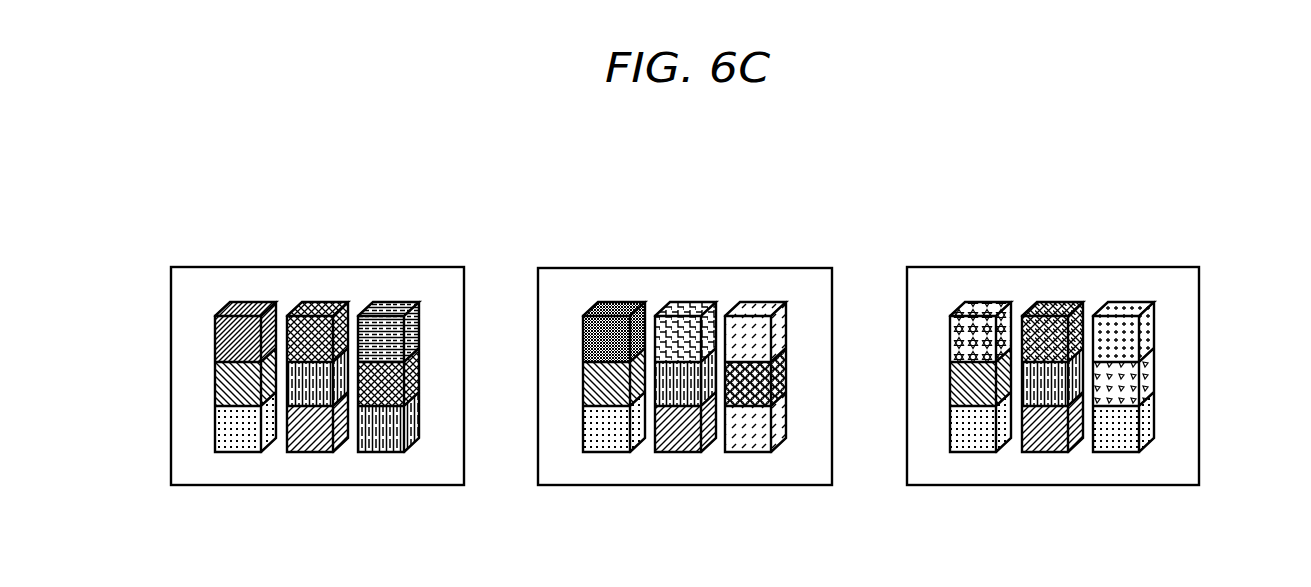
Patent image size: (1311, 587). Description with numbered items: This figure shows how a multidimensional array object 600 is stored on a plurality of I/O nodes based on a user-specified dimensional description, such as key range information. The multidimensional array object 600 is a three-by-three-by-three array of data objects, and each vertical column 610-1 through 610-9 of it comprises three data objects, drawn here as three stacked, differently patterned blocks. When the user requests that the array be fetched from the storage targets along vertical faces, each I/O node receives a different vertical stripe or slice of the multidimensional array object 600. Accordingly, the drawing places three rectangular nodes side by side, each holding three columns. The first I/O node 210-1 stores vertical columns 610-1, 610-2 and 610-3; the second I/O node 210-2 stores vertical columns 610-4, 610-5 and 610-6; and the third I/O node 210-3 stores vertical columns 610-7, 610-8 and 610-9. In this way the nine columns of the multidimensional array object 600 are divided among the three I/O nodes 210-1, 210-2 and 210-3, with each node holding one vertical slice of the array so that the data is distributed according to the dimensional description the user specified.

The multidimensional array object 600 is at (1212, 163).
The I/O node 210-1 is at (341, 486).
The I/O node 210-2 is at (708, 486).
The I/O node 210-3 is at (1076, 486).
The vertical column 610-1 is at (248, 300).
The vertical column 610-2 is at (319, 300).
The vertical column 610-3 is at (395, 300).
The vertical column 610-4 is at (615, 300).
The vertical column 610-5 is at (686, 300).
The vertical column 610-6 is at (762, 300).
The vertical column 610-7 is at (983, 300).
The vertical column 610-8 is at (1054, 300).
The vertical column 610-9 is at (1130, 300).